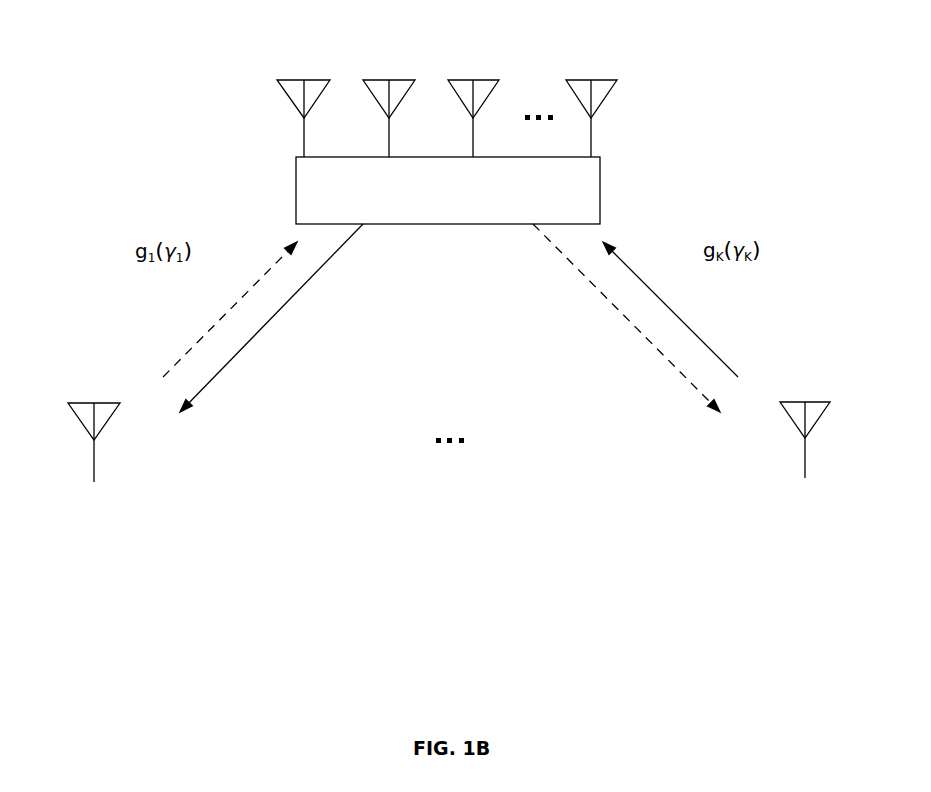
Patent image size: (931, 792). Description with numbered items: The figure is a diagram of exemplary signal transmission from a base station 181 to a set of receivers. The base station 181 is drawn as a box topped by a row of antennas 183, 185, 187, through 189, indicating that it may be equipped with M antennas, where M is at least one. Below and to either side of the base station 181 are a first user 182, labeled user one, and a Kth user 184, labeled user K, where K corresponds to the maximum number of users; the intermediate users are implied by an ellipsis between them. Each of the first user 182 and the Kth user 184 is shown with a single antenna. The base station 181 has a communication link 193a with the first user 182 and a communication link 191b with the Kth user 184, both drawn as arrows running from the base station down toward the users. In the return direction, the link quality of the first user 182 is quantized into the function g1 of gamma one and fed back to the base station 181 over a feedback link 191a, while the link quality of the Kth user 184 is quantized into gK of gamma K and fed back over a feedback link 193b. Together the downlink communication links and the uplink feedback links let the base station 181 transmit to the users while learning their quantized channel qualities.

The base station 181 is at (296, 198).
The first user 182 is at (94, 403).
The antenna 183 is at (304, 80).
The Kth user 184 is at (805, 402).
The antenna 185 is at (389, 80).
The antenna 187 is at (473, 80).
The antenna 189 is at (591, 80).
The feedback link 191a is at (230, 308).
The communication link 191b is at (623, 317).
The communication link 193a is at (265, 325).
The feedback link 193b is at (652, 290).